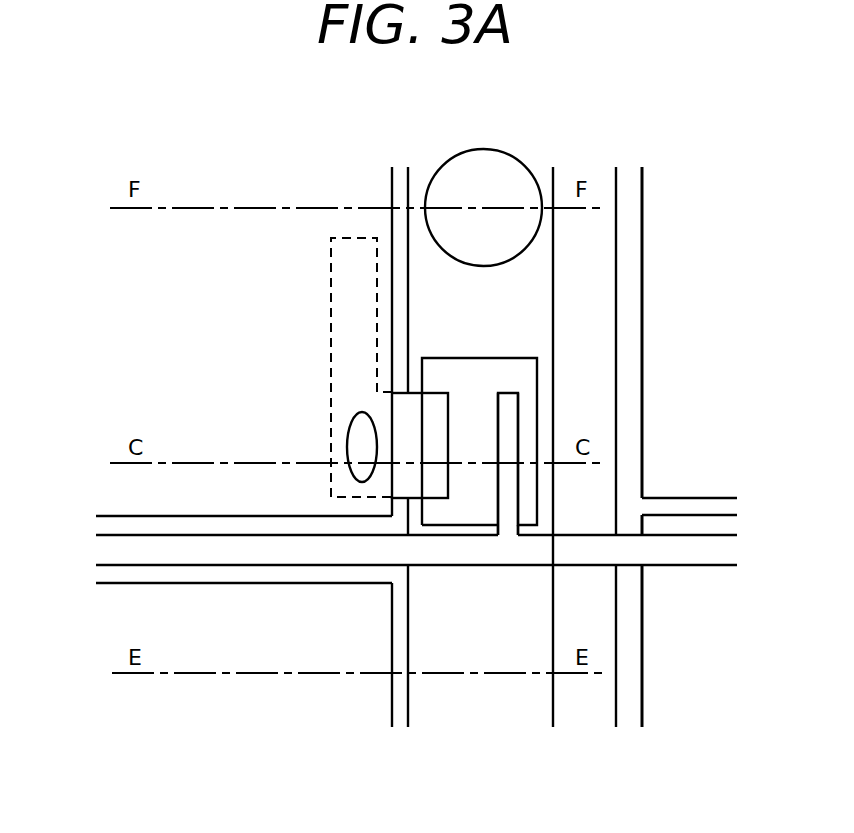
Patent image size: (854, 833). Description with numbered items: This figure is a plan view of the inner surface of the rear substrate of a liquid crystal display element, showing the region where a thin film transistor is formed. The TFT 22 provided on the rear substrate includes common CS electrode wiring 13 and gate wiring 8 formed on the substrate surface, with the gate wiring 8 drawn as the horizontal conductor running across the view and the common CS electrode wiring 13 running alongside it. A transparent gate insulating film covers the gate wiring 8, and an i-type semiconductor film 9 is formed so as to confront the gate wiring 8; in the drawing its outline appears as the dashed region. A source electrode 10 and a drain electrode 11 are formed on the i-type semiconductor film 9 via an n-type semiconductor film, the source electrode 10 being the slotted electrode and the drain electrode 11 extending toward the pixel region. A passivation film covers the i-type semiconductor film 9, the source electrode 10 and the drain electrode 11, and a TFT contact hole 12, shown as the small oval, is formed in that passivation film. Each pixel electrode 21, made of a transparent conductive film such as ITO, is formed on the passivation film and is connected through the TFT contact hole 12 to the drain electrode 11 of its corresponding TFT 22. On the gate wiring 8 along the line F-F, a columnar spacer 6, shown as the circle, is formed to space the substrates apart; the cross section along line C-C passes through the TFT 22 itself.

The columnar spacer 6 is at (512, 172).
The gate wiring 8 is at (487, 303).
The i-type semiconductor film 9 is at (510, 370).
The source electrode 10 is at (510, 410).
The drain electrode 11 is at (338, 323).
The TFT contact hole 12 is at (358, 427).
The common CS electrode wiring 13 is at (632, 353).
The pixel electrode 21 is at (369, 193).
The TFT 22 is at (570, 513).